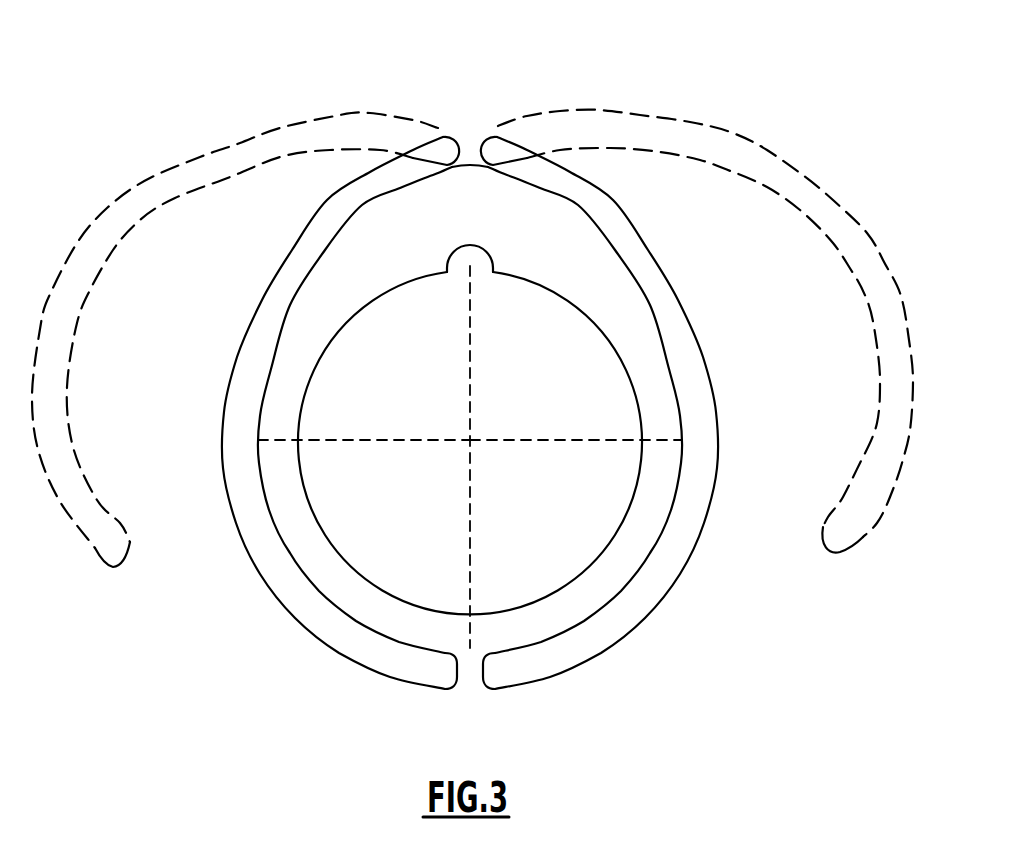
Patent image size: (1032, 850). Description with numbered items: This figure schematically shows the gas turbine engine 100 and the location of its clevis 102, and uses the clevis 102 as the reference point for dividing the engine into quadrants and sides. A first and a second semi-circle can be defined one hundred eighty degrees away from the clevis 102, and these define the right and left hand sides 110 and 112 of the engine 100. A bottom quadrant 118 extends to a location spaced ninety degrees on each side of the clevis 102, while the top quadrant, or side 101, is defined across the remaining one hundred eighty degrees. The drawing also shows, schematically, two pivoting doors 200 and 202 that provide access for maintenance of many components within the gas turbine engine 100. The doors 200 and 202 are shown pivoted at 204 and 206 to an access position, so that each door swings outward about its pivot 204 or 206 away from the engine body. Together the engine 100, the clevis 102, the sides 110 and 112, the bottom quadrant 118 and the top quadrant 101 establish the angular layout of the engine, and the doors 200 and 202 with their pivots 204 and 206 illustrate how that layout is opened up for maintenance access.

The gas turbine engine 100 is at (476, 85).
The top quadrant 101 is at (389, 242).
The clevis 102 is at (477, 262).
The right hand side 110 is at (364, 423).
The left hand side 112 is at (576, 423).
The bottom quadrant 118 is at (470, 662).
The pivoting door 200 is at (293, 280).
The pivoting door 202 is at (647, 280).
The pivot 204 is at (245, 140).
The pivot 206 is at (695, 140).